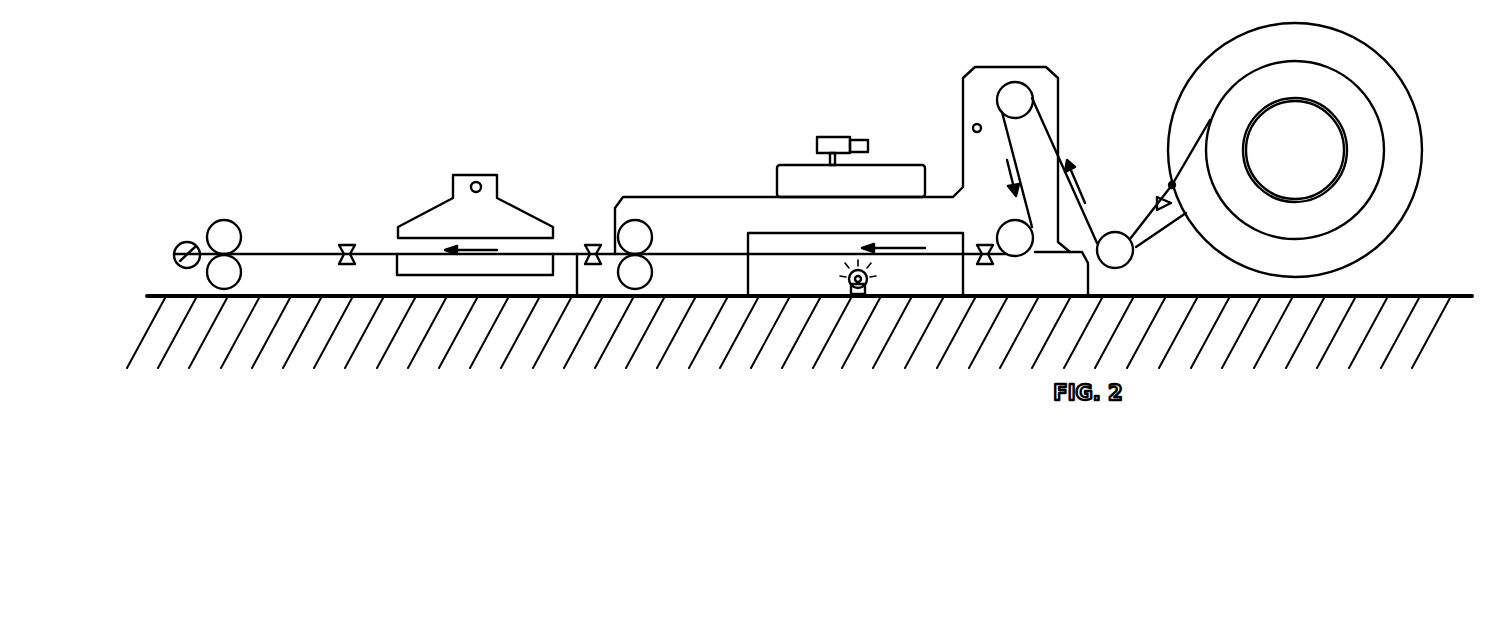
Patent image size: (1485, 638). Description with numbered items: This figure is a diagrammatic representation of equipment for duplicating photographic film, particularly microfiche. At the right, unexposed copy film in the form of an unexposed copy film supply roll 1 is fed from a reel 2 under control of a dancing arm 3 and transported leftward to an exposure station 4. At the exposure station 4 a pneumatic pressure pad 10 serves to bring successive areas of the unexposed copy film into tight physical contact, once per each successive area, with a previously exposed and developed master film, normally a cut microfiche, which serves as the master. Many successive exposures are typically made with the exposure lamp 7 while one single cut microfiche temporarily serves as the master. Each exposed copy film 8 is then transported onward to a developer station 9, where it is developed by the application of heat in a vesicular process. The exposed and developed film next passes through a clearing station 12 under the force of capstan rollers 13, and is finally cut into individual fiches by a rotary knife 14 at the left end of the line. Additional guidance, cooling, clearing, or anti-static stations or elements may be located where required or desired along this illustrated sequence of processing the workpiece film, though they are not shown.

The unexposed copy film supply roll 1 is at (1367, 97).
The reel 2 is at (1347, 33).
The dancing arm 3 is at (1113, 232).
The exposure station 4 is at (804, 140).
The exposure lamp 7 is at (846, 286).
The exposed copy film 8 is at (692, 252).
The developer station 9 is at (496, 171).
The pneumatic pressure pad 10 is at (877, 183).
The clearing station 12 is at (347, 243).
The capstan rollers 13 is at (235, 223).
The rotary knife 14 is at (190, 243).